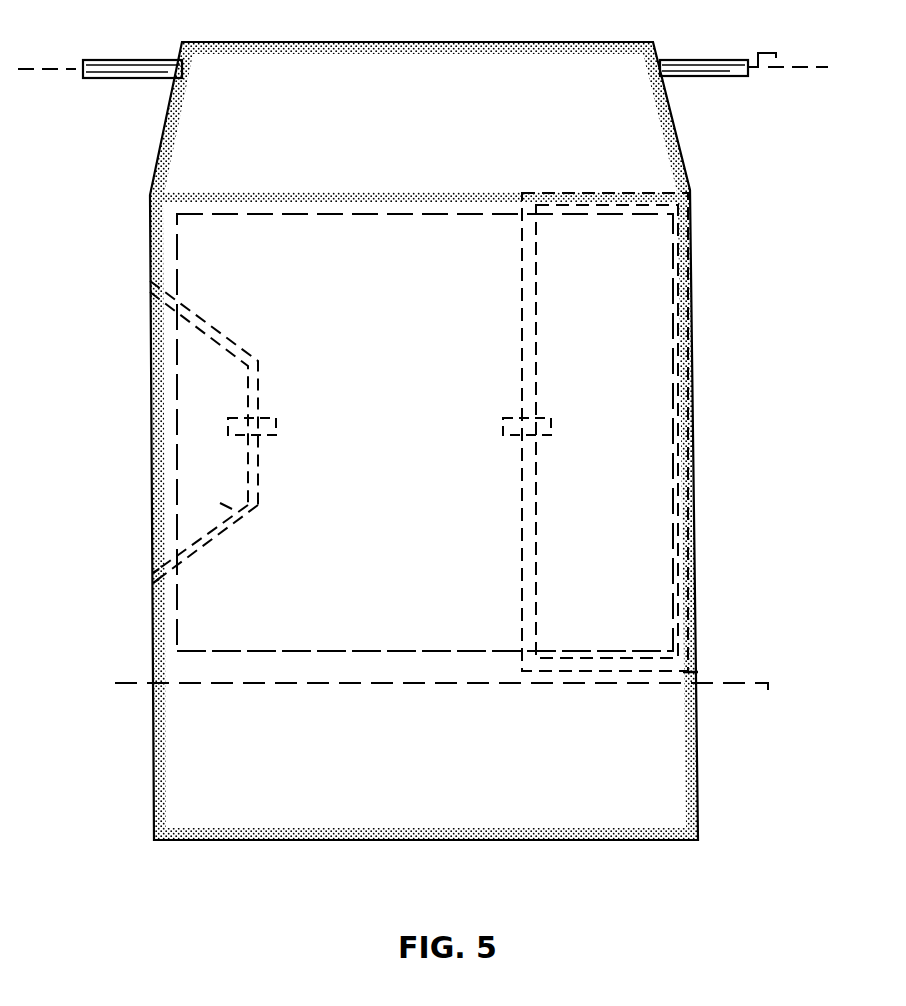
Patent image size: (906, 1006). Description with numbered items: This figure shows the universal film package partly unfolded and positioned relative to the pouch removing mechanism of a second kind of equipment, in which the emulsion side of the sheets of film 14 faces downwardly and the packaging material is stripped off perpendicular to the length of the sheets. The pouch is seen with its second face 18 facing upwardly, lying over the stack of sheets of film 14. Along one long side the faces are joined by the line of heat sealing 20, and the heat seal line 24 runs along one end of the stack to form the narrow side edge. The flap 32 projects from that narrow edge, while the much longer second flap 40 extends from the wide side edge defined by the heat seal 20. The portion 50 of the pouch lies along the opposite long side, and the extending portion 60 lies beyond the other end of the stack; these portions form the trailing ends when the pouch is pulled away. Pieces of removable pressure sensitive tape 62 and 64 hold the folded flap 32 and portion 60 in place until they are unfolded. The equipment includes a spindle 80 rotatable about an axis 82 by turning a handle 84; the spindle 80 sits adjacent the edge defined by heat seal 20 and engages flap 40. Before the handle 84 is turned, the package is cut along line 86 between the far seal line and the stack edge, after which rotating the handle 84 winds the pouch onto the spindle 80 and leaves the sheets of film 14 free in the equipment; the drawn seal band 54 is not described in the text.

The sheets of film 14 is at (381, 652).
The second face 18 is at (396, 384).
The line of heat sealing 20 is at (333, 192).
The heat seal line 24 is at (152, 311).
The flap 32 is at (262, 511).
The second flap 40 is at (437, 128).
The portion of the pouch 50 is at (495, 775).
The bottom seal 54 is at (608, 826).
The extending portion 60 is at (565, 488).
The piece of removable pressure sensitive tape 62 is at (264, 421).
The piece of removable pressure sensitive tape 64 is at (546, 426).
The spindle 80 is at (133, 58).
The axis 82 is at (34, 64).
The handle 84 is at (768, 52).
The cut line 86 is at (768, 691).